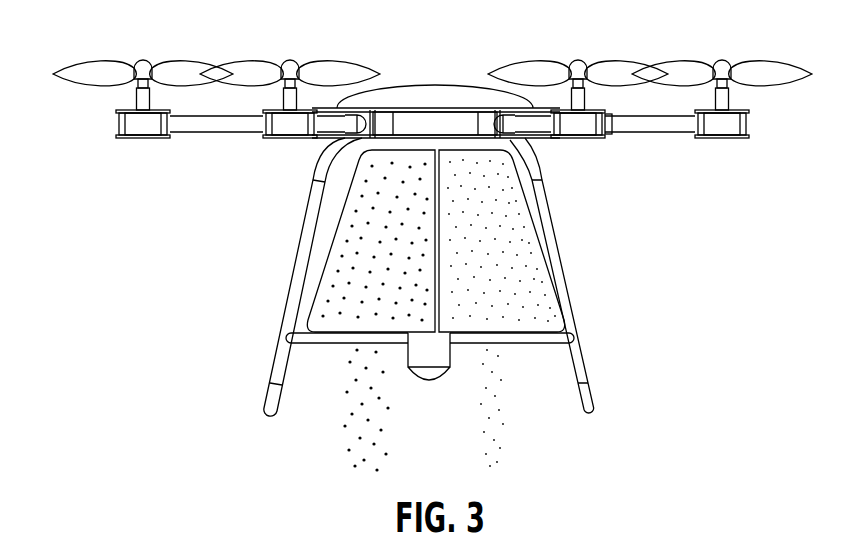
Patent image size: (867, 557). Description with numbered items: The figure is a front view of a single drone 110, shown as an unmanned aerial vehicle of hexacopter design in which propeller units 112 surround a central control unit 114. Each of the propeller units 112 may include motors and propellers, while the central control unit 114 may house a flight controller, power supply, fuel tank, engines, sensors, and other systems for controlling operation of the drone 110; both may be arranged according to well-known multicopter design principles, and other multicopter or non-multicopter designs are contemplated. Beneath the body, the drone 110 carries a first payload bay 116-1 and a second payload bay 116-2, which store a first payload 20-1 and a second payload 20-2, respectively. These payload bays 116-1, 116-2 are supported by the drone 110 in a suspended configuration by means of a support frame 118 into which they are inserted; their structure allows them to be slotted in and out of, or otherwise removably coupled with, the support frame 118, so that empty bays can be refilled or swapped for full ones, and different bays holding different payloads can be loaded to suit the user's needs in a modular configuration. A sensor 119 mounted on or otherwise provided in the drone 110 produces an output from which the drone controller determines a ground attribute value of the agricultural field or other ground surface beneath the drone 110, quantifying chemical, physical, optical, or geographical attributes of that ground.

The drone 110 is at (142, 250).
The propeller units 112 is at (123, 120).
The central control unit 114 is at (427, 90).
The first payload bay 116-1 is at (307, 321).
The second payload bay 116-2 is at (567, 293).
The support frame 118 is at (548, 218).
The sensor 119 is at (427, 381).
The first payload 20-1 is at (337, 302).
The second payload 20-2 is at (525, 268).